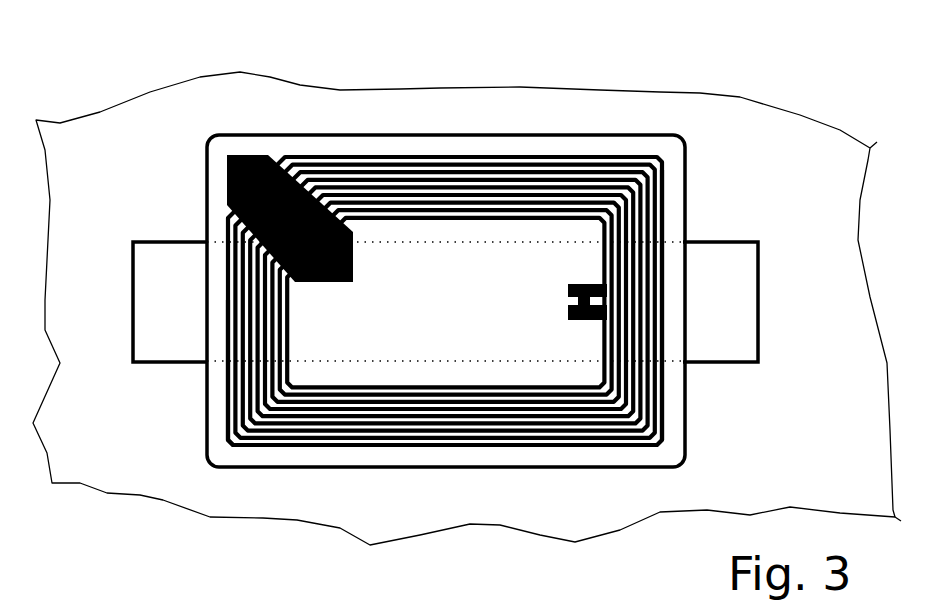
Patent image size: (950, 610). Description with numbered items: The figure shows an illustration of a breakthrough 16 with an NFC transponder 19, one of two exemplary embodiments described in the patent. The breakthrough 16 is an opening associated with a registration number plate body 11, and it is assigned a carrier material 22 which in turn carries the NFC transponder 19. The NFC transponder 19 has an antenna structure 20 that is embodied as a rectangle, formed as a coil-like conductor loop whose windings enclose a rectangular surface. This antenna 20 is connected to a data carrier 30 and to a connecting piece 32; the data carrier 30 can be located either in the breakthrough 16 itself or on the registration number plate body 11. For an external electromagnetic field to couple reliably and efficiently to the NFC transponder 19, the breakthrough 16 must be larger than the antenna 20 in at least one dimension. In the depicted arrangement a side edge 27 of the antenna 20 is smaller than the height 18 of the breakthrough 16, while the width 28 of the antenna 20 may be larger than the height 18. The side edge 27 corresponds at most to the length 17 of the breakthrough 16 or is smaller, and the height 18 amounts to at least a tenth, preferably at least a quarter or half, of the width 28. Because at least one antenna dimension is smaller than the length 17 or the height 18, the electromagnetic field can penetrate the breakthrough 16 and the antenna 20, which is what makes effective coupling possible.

The registration number plate body 11 is at (187, 478).
The breakthrough 16 is at (444, 312).
The length 17 is at (163, 363).
The height 18 is at (758, 320).
The NFC transponder 19 is at (372, 152).
The antenna structure 20 is at (590, 287).
The carrier material 22 is at (278, 452).
The side edge 27 is at (473, 446).
The width 28 is at (660, 407).
The data carrier 30 is at (652, 160).
The connecting piece 32 is at (242, 153).